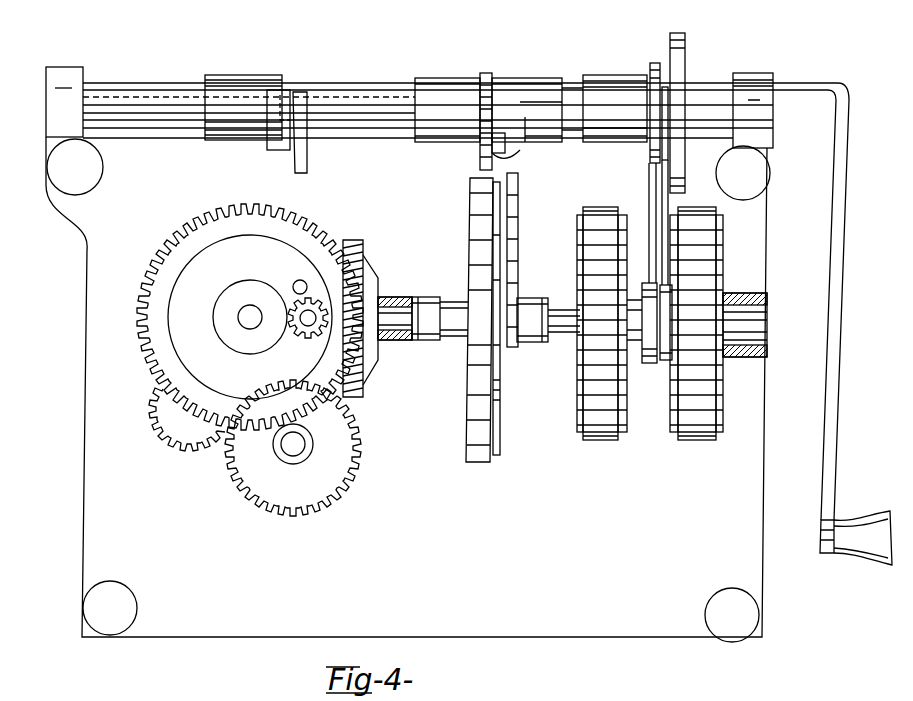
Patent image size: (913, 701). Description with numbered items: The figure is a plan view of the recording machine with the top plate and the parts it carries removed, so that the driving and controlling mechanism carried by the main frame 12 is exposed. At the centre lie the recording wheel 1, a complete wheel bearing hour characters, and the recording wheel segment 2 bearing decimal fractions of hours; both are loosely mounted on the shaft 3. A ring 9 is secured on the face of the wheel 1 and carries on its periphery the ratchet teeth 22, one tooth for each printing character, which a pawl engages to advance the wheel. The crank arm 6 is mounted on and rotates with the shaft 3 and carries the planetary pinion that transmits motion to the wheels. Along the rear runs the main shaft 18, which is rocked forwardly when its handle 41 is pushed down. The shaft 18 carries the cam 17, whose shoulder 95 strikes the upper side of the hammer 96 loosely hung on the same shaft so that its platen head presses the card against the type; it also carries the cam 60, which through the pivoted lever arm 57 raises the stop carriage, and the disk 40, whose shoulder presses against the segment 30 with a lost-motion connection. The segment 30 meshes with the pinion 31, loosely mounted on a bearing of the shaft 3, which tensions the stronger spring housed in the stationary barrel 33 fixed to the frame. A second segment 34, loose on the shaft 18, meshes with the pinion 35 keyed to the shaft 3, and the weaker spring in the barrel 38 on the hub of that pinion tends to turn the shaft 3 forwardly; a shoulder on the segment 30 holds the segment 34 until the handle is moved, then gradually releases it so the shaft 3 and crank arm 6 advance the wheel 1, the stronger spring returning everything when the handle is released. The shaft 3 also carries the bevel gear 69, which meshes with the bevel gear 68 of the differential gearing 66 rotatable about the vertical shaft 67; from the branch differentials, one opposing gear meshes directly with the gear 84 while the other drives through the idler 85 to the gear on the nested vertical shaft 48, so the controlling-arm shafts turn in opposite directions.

The recording wheel 1 is at (478, 252).
The recording wheel segment 2 is at (518, 243).
The shaft 3 is at (560, 338).
The crank arm 6 is at (432, 342).
The ring 9 is at (500, 420).
The main frame 12 is at (408, 354).
The cam 17 is at (485, 75).
The main shaft 18 is at (371, 95).
The ratchet teeth 22 is at (500, 385).
The segment 30 is at (672, 190).
The pinion 31 is at (664, 362).
The stationary barrel 33 is at (695, 440).
The segment 34 is at (650, 201).
The pinion 35 is at (648, 364).
The barrel 38 is at (598, 440).
The disk 40 is at (733, 161).
The handle 41 is at (833, 272).
The vertical shaft 48 is at (297, 448).
The lever arm 57 is at (307, 157).
The cam 60 is at (278, 148).
The differential gearing 66 is at (306, 330).
The vertical shaft 67 is at (250, 317).
The bevel gear 68 is at (312, 230).
The bevel gear 69 is at (350, 240).
The gear 84 is at (350, 448).
The idler 85 is at (192, 426).
The shoulder 95 is at (505, 145).
The hammer 96 is at (516, 160).